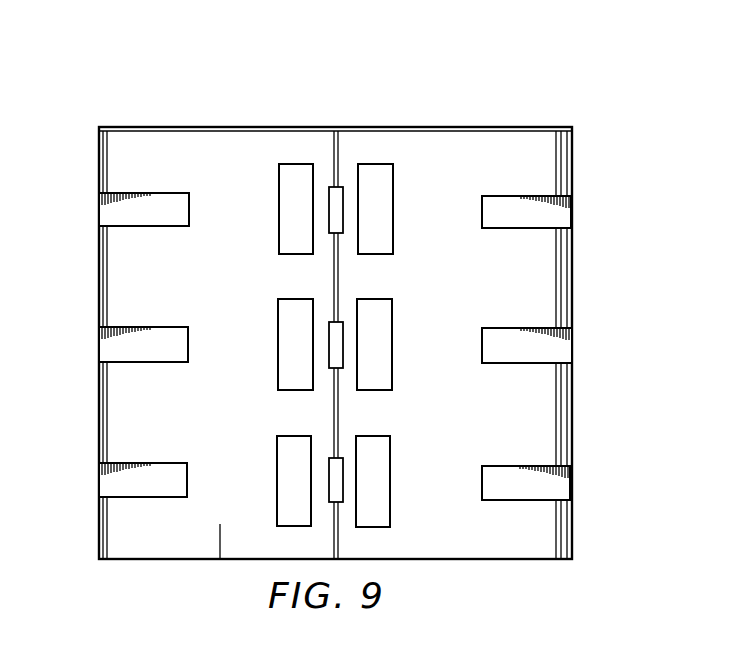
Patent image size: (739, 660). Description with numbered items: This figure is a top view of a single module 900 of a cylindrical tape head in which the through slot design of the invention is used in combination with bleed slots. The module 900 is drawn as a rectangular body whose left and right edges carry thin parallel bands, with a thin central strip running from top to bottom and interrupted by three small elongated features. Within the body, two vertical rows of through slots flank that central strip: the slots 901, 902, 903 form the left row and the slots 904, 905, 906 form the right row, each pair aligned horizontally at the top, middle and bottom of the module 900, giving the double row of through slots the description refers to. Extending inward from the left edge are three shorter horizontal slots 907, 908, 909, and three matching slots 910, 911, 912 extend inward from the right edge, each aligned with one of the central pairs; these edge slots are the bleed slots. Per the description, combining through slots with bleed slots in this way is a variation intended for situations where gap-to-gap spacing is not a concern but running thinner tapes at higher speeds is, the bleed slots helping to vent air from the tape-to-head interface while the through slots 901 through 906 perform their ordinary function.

The integrated circuit / lead frame assembly 900 is at (152, 78).
The first die pad 901 is at (285, 209).
The second die pad 902 is at (283, 345).
The third die pad 903 is at (283, 482).
The fourth die pad 904 is at (385, 209).
The fifth die pad 905 is at (385, 345).
The sixth die pad 906 is at (385, 482).
The first left lead 907 is at (110, 213).
The second left lead 908 is at (108, 350).
The third left lead 909 is at (108, 484).
The first right lead 910 is at (562, 217).
The second right lead 911 is at (558, 352).
The third right lead 912 is at (558, 488).